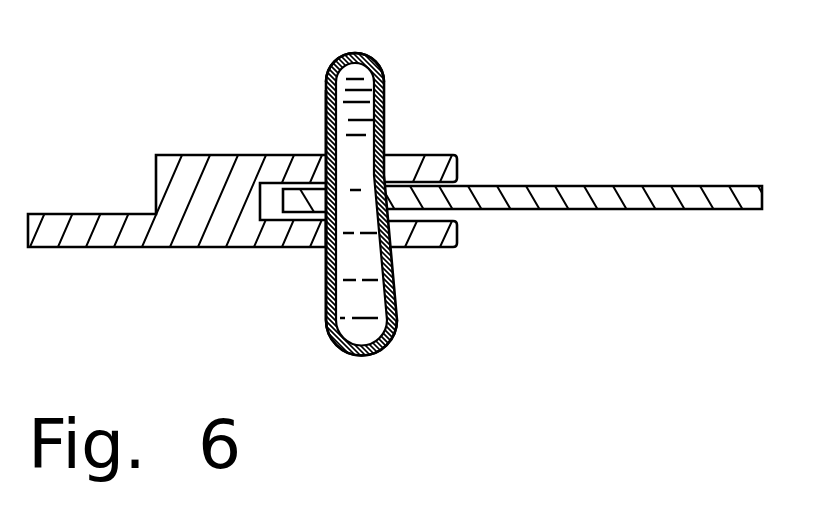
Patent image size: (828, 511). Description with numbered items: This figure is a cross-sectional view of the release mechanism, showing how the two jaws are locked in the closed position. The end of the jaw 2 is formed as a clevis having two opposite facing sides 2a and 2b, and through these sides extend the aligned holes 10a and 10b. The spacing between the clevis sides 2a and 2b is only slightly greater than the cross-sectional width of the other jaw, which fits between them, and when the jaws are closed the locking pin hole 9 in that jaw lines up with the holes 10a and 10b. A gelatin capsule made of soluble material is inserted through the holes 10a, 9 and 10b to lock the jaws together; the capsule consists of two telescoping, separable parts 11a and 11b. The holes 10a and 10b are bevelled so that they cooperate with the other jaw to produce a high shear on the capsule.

The jaw 2 is at (82, 230).
The clevis side 2a is at (428, 235).
The clevis side 2b is at (415, 168).
The locking pin hole 9 is at (412, 203).
The hole 10a is at (399, 262).
The hole 10b is at (325, 155).
The gel-cap part 11a is at (358, 353).
The gel-cap part 11b is at (368, 57).